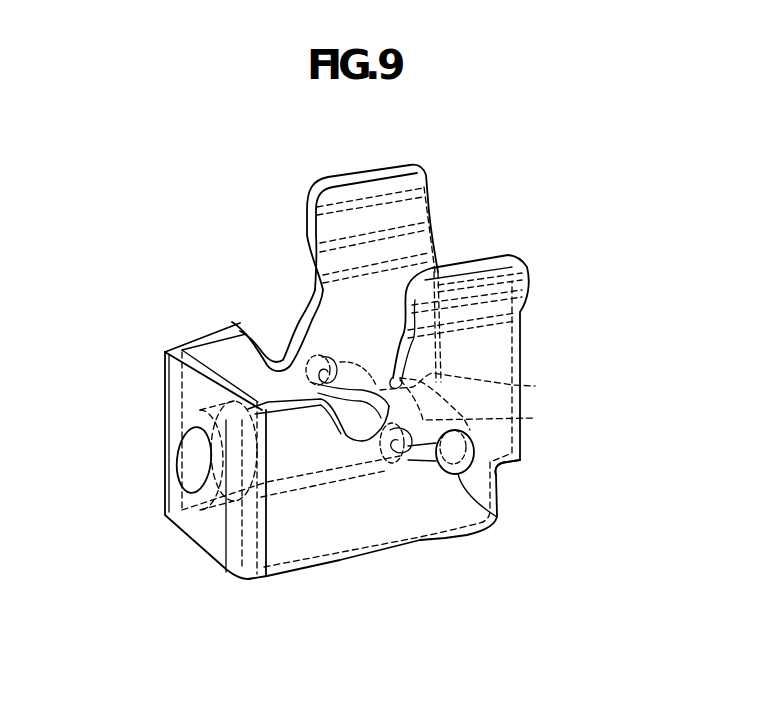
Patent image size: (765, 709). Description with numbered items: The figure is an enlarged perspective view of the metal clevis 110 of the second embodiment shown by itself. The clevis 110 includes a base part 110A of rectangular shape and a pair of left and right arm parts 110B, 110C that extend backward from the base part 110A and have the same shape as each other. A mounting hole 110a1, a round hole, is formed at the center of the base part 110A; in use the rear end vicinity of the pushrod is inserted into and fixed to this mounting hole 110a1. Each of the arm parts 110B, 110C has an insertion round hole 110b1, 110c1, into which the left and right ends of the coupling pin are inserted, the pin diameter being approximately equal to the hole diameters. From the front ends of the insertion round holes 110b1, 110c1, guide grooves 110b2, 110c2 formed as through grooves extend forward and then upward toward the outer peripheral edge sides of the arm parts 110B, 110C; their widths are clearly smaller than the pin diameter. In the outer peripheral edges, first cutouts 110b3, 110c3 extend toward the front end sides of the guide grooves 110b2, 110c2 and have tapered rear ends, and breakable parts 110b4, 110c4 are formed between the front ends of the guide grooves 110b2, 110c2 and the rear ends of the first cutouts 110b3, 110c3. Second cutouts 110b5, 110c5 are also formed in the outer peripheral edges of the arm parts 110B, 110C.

The clevis 110 is at (221, 277).
The base part 110A is at (177, 390).
The arm part 110B is at (520, 345).
The arm part 110C is at (417, 208).
The mounting hole 110a1 is at (194, 493).
The insertion round hole 110b1 is at (497, 518).
The guide groove 110b2 is at (420, 462).
The first cutout 110b3 is at (352, 440).
The breakable part 110b4 is at (387, 438).
The second cutout 110b5 is at (497, 468).
The insertion round hole 110c1 is at (535, 386).
The guide groove 110c2 is at (322, 364).
The first cutout 110c3 is at (248, 330).
The breakable part 110c4 is at (318, 380).
The second cutout 110c5 is at (535, 418).